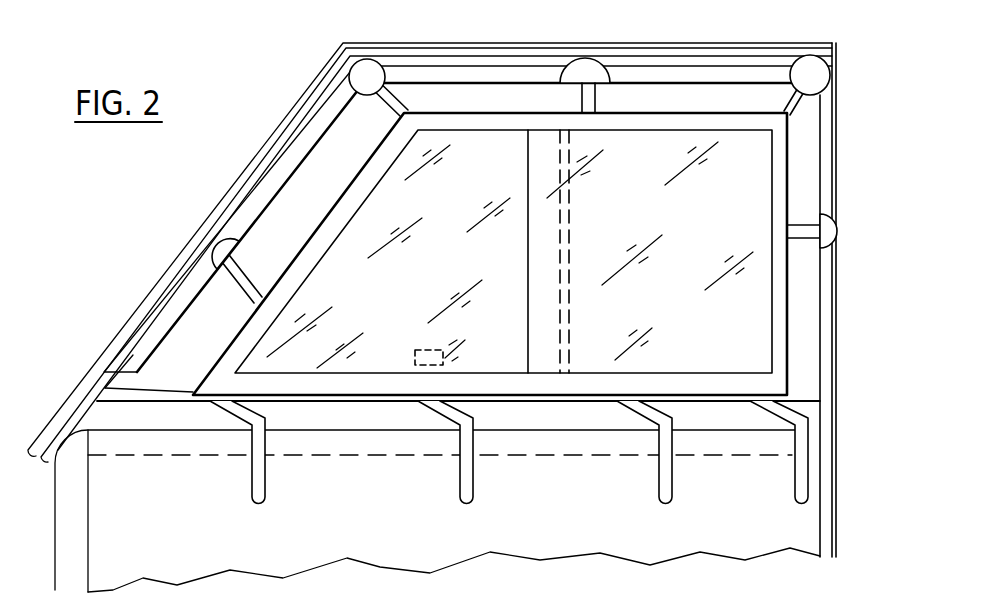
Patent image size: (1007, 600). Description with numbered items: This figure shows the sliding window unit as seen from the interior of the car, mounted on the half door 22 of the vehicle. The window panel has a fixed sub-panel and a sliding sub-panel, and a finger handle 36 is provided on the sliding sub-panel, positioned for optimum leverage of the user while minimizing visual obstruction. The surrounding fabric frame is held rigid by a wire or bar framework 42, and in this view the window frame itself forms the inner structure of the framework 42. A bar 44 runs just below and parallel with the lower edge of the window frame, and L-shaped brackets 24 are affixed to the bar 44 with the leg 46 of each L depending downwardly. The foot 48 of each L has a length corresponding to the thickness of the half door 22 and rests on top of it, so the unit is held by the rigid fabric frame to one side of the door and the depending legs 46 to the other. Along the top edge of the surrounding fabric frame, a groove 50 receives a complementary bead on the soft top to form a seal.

The half door 22 is at (546, 535).
The brackets 24 is at (539, 457).
The finger handle 36 is at (418, 349).
The framework 42 is at (583, 72).
The bar 44 is at (807, 390).
The leg 46 is at (803, 462).
The foot 48 is at (792, 416).
The groove 50 is at (760, 42).